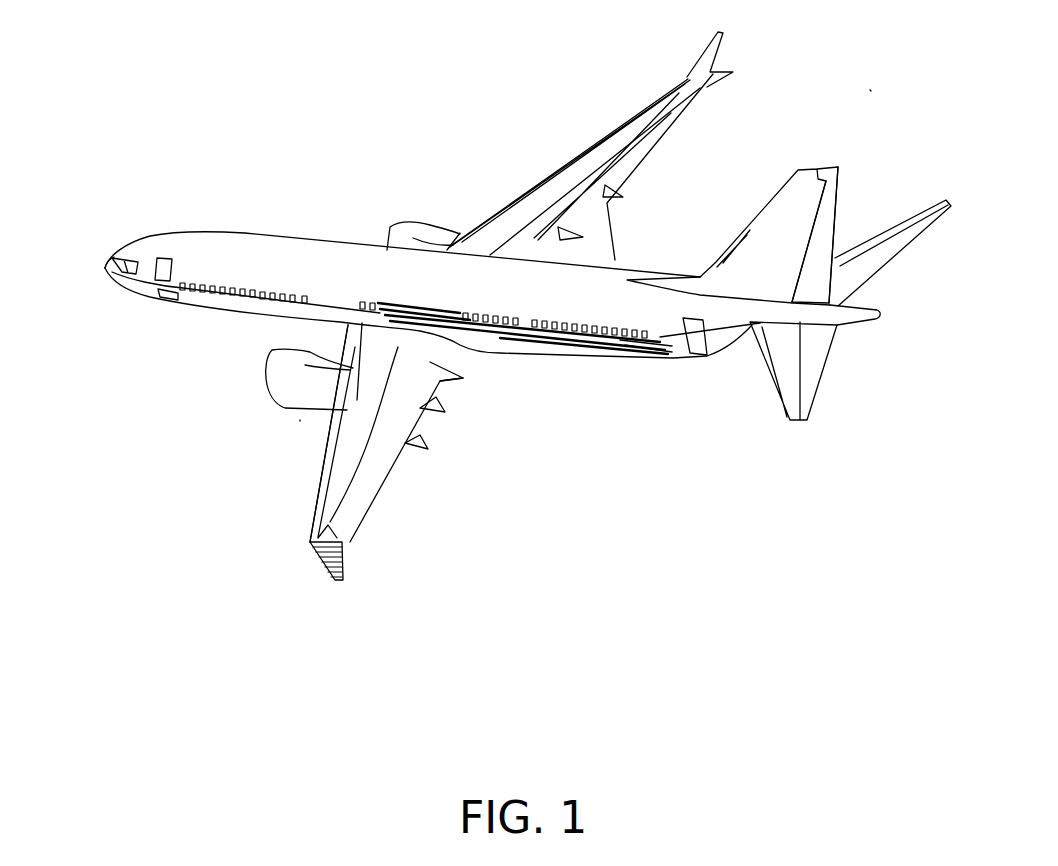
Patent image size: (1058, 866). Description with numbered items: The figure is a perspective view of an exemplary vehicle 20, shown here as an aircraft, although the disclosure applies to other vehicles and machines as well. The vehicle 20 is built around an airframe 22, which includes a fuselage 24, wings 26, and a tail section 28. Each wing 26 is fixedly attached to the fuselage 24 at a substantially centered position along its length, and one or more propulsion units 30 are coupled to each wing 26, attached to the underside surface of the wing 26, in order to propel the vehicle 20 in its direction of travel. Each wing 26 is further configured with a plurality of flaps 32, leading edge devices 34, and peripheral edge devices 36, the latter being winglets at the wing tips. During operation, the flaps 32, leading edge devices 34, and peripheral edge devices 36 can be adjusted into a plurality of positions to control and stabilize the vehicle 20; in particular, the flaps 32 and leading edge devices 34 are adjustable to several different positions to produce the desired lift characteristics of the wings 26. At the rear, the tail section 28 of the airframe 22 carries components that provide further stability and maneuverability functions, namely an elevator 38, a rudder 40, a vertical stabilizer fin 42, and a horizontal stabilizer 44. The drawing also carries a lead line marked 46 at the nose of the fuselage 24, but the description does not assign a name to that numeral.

The vehicle 20 is at (230, 120).
The airframe 22 is at (200, 462).
The fuselage 24 is at (253, 263).
The wings 26 is at (553, 200).
The tail section 28 is at (863, 86).
The propulsion units 30 is at (430, 227).
The flaps 32 is at (620, 157).
The leading edge devices 34 is at (620, 128).
The peripheral edge devices 36 is at (710, 55).
The elevator 38 is at (867, 278).
The rudder 40 is at (827, 232).
The vertical stabilizer fin 42 is at (805, 197).
The horizontal stabilizer 44 is at (790, 385).
The nose 46 is at (107, 265).